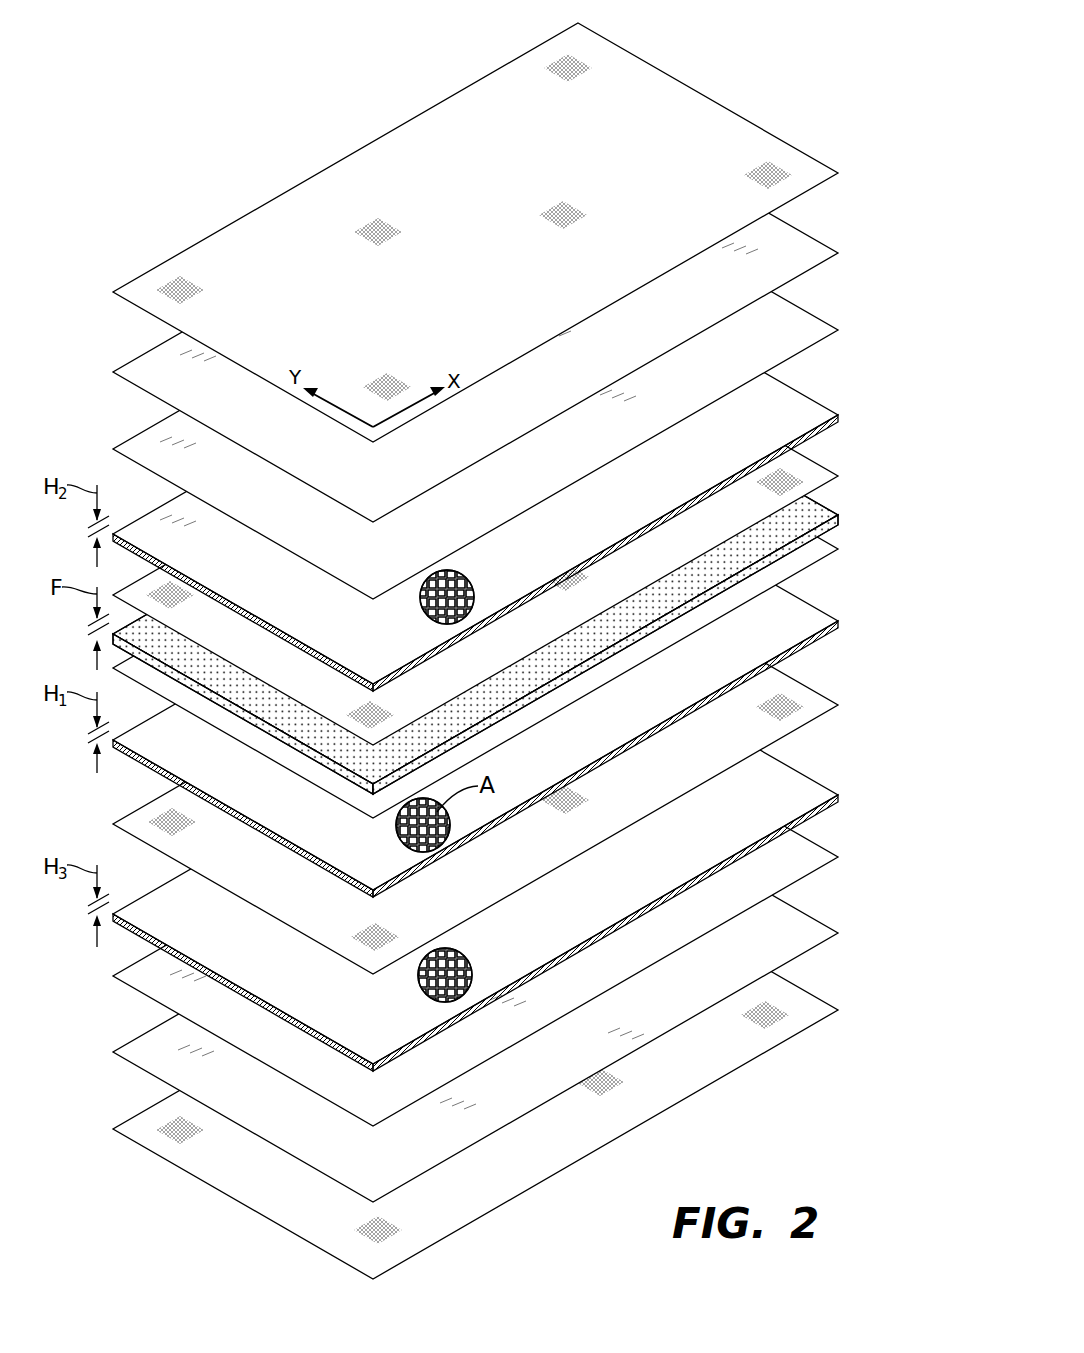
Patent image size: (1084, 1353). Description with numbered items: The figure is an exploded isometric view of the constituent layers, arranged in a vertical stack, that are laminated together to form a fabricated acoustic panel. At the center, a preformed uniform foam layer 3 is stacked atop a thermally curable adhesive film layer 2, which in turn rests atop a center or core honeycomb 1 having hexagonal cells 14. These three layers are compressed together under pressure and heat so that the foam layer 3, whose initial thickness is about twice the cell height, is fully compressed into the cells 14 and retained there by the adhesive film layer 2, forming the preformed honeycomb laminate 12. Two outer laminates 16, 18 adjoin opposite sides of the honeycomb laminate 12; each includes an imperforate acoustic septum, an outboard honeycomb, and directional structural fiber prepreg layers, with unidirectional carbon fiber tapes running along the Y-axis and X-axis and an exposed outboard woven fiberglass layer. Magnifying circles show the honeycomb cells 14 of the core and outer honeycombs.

The core honeycomb 1 is at (825, 614).
The thermally curable adhesive film layer 2 is at (825, 542).
The foam layer 3 is at (825, 508).
The honeycomb laminate 12 is at (885, 635).
The honeycomb cells 14 is at (458, 592).
The outer laminate 16 is at (885, 483).
The outer laminate 18 is at (885, 672).